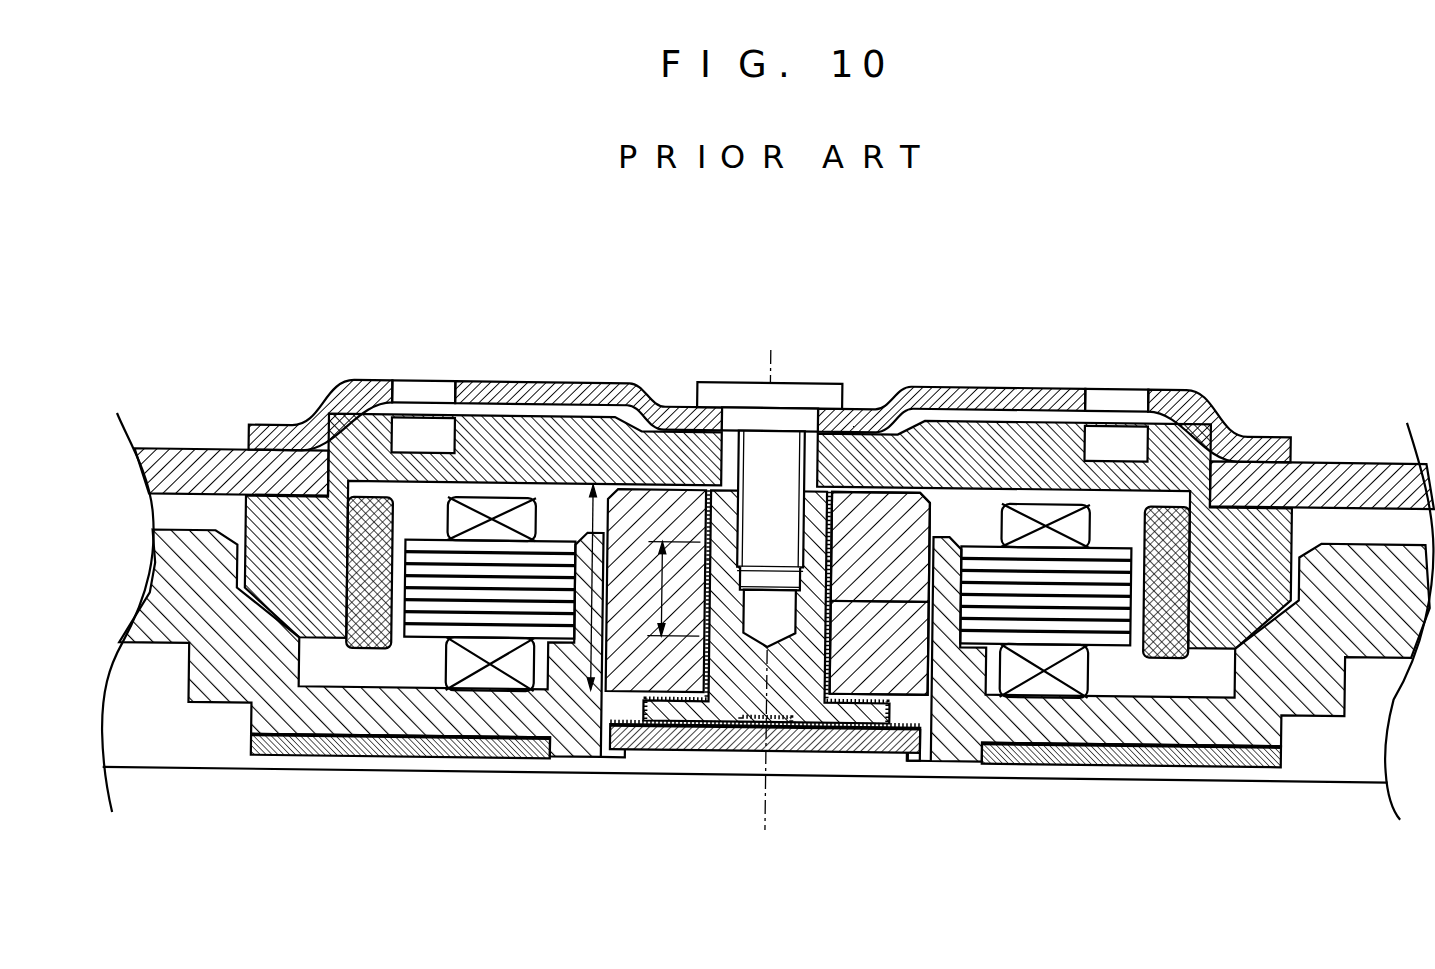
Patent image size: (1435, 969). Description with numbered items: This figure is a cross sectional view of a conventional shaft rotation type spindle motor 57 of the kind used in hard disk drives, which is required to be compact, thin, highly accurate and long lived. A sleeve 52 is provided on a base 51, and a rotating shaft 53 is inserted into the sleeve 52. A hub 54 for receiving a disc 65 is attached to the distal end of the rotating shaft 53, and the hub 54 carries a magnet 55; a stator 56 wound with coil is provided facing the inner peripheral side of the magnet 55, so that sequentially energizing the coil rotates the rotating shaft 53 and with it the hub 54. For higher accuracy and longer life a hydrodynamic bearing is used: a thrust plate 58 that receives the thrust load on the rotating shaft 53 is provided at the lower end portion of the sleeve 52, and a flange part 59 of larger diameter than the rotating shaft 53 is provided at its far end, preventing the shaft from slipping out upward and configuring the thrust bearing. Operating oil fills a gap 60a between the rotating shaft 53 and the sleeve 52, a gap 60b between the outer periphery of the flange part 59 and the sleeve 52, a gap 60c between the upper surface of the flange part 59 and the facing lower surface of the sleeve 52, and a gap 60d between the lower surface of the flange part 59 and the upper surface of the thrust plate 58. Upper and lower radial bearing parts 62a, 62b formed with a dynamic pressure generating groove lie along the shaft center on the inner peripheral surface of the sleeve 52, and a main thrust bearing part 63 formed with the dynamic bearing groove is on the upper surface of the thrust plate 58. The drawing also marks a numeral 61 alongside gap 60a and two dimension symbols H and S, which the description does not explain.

The base 51 is at (443, 707).
The sleeve 52 is at (952, 485).
The rotating shaft 53 is at (737, 675).
The hub 54 is at (478, 440).
The magnet 55 is at (377, 648).
The stator 56 is at (500, 610).
The spindle motor 57 is at (266, 366).
The thrust plate 58 is at (680, 757).
The flange part 59 is at (640, 757).
The gap 60a is at (850, 500).
The gap 60b is at (870, 688).
The gap 60c is at (952, 660).
The gap 60d is at (787, 722).
The gap 61 is at (708, 524).
The upper radial bearing part 62a is at (857, 513).
The lower radial bearing part 62b is at (905, 650).
The main thrust bearing part 63 is at (857, 727).
The disc 65 is at (180, 467).
The height dimension H is at (583, 520).
The spacing dimension S is at (642, 578).